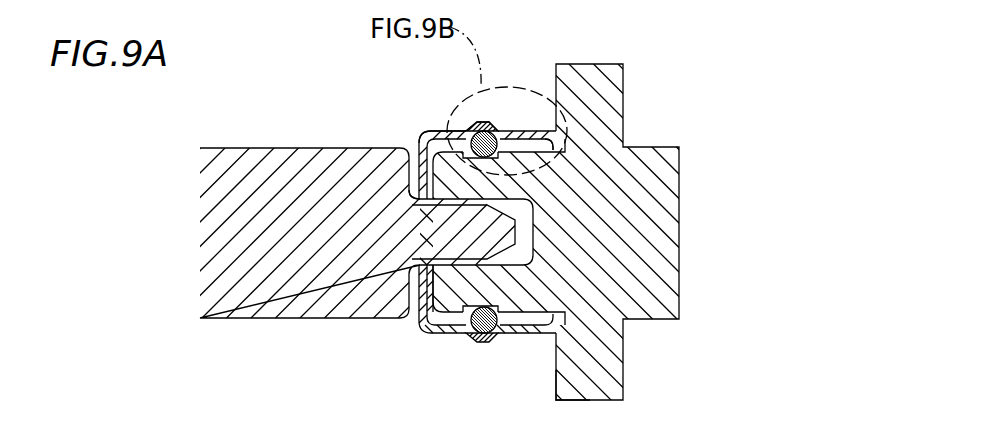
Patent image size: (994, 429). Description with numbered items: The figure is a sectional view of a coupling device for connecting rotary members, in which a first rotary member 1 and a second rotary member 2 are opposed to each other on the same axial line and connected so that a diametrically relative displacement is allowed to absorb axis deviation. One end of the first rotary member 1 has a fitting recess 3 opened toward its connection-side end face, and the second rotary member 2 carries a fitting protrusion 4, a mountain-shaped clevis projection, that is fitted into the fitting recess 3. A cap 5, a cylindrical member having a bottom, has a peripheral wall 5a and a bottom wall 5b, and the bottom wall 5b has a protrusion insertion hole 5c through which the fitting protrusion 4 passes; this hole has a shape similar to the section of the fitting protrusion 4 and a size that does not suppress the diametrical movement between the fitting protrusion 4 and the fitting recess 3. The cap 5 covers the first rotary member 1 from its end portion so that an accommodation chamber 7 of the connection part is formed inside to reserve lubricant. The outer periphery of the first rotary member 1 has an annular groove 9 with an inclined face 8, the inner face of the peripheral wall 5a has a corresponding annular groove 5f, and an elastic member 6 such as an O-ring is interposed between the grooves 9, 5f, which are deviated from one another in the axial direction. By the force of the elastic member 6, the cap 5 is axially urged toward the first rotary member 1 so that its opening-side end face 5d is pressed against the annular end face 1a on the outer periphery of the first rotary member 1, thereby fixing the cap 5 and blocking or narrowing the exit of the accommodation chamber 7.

The first rotary member 1 is at (632, 330).
The annular end face 1a is at (556, 381).
The second rotary member 2 is at (247, 148).
The fitting recess 3 is at (522, 237).
The fitting protrusion 4 is at (437, 236).
The cap 5 is at (424, 133).
The peripheral wall 5a is at (532, 131).
The bottom wall 5b is at (410, 140).
The protrusion insertion hole 5c is at (420, 203).
The opening-side end face 5d is at (553, 134).
The annular groove 5f is at (471, 124).
The elastic member 6 is at (484, 131).
The accommodation chamber 7 is at (455, 324).
The inclined face 8 is at (473, 130).
The annular groove 9 is at (502, 131).